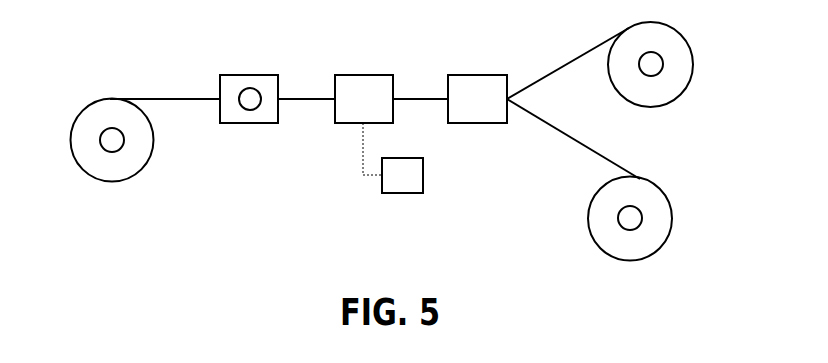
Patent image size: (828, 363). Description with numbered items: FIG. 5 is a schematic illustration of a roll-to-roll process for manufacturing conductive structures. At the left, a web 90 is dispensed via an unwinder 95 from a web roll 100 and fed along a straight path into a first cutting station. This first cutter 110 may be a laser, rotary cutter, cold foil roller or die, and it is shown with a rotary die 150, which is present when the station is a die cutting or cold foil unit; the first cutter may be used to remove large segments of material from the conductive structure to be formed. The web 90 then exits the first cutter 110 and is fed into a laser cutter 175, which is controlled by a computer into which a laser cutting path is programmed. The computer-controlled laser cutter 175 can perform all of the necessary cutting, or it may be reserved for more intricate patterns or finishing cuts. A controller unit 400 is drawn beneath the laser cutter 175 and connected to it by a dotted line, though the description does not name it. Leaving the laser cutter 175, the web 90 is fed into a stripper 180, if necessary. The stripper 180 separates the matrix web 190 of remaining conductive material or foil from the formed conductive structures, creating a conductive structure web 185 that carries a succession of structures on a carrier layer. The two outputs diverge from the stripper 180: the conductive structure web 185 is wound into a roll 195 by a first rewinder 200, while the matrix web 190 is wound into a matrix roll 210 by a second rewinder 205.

The web 90 is at (170, 97).
The unwinder 95 is at (113, 147).
The web roll 100 is at (138, 162).
The first cutter 110 is at (250, 82).
The rotary die 150 is at (245, 115).
The laser cutter 175 is at (363, 78).
The stripper 180 is at (481, 80).
The conductive structure web 185 is at (565, 63).
The matrix web 190 is at (565, 137).
The roll 195 is at (677, 87).
The first rewinder 200 is at (652, 72).
The second rewinder 205 is at (630, 225).
The matrix roll 210 is at (657, 240).
The controller 400 is at (418, 173).